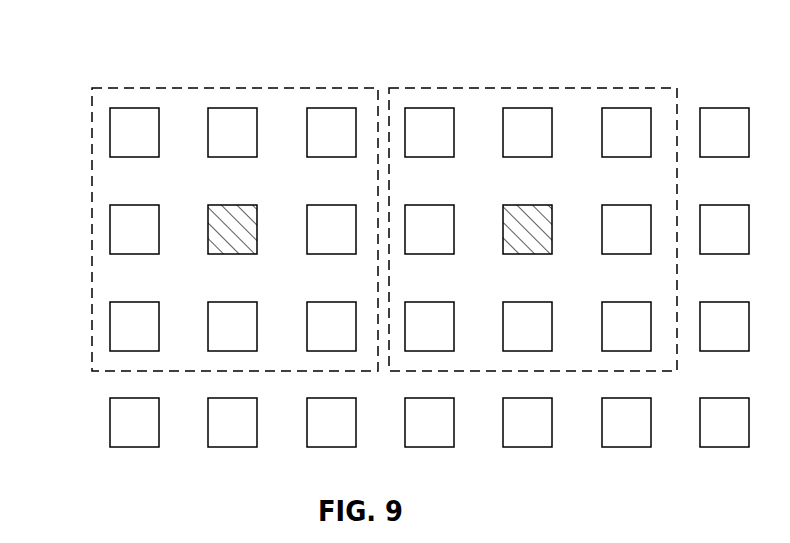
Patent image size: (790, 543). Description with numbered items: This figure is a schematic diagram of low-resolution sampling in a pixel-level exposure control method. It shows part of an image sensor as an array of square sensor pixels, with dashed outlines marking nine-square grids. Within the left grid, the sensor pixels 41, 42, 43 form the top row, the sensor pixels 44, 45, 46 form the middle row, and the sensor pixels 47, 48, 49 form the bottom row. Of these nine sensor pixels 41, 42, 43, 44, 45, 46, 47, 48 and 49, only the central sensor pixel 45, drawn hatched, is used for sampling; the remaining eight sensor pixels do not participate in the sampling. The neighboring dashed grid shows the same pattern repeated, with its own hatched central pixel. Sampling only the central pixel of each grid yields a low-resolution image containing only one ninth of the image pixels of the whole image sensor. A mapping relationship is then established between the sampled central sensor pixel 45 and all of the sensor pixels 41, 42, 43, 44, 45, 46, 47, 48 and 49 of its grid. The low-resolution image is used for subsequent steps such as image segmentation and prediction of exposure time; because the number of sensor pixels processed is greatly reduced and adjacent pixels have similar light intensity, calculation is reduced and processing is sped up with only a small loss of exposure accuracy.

The sensor pixel 41 is at (140, 128).
The sensor pixel 42 is at (238, 128).
The sensor pixel 43 is at (337, 128).
The sensor pixel 44 is at (132, 229).
The central sensor pixel 45 is at (223, 228).
The sensor pixel 46 is at (320, 229).
The sensor pixel 47 is at (132, 333).
The sensor pixel 48 is at (228, 325).
The sensor pixel 49 is at (323, 325).